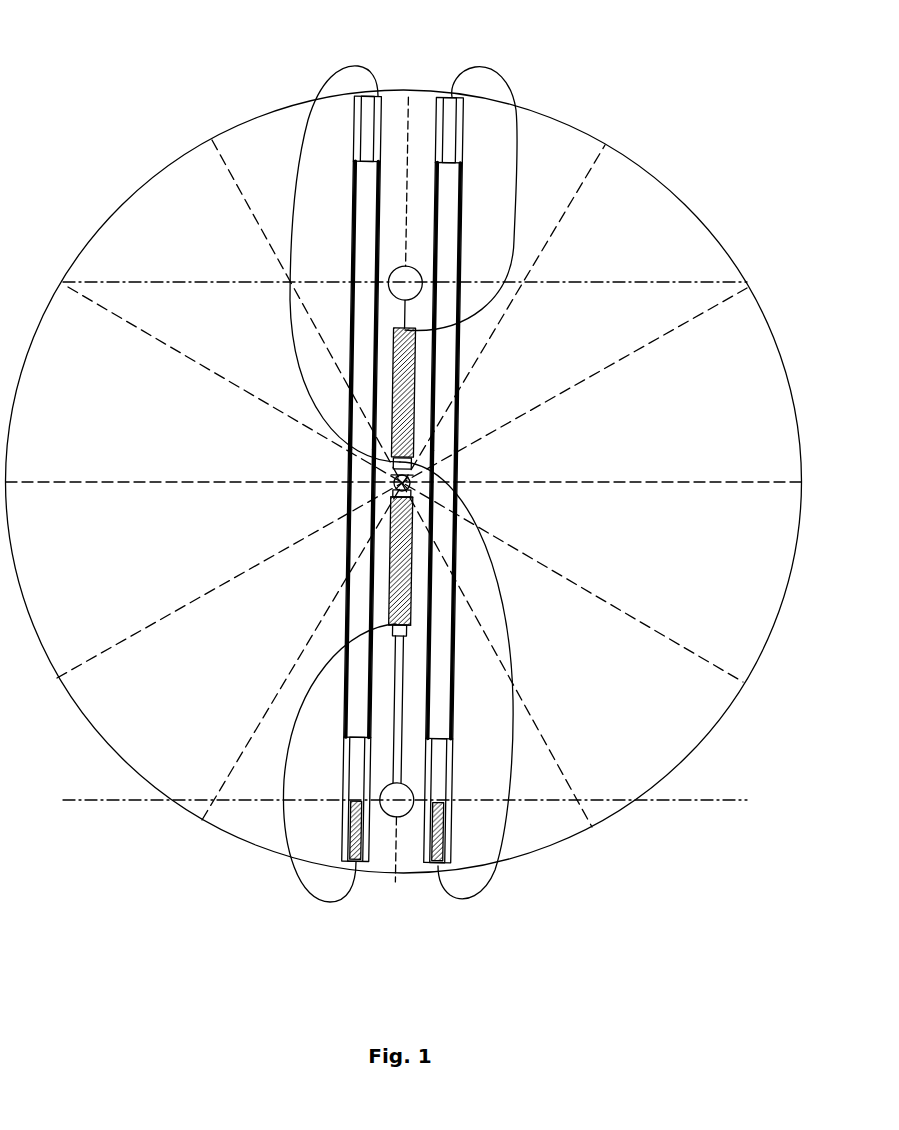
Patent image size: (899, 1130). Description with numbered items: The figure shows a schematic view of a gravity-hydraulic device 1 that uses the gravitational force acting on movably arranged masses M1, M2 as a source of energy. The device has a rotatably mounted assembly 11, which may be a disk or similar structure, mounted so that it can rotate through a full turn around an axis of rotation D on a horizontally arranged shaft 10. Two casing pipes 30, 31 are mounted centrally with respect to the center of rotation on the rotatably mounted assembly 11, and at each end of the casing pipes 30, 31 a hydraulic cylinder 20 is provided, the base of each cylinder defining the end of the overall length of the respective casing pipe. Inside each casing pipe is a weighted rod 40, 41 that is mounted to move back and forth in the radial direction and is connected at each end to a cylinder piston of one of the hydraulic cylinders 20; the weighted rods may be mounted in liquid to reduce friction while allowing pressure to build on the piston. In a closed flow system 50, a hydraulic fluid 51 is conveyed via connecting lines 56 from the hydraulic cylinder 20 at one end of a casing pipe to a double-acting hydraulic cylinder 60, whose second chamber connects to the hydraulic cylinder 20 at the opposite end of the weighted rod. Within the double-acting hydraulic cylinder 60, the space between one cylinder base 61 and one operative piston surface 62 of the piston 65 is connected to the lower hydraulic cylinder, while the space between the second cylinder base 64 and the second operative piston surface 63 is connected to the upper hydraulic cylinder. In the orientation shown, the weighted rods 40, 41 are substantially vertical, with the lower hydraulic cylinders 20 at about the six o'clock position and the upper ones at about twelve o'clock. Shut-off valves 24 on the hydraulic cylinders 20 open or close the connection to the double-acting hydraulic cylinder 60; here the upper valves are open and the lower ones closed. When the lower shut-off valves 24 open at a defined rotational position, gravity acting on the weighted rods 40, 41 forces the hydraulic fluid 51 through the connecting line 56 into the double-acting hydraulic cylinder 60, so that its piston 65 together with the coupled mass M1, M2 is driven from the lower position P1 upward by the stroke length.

The gravity-hydraulic device 1 is at (648, 127).
The horizontally arranged shaft 10 is at (412, 485).
The rotatably mounted assembly 11 is at (133, 240).
The hydraulic cylinder 20 is at (362, 138).
The shut-off valve 24 is at (373, 92).
The casing pipe 30 is at (345, 563).
The casing pipe 31 is at (458, 405).
The weighted rod 40 is at (448, 666).
The weighted rod 41 is at (362, 255).
The flow system 50 is at (518, 705).
The hydraulic fluid 51 is at (442, 827).
The connecting line 56 is at (340, 72).
The double-acting hydraulic cylinder 60 is at (405, 550).
The cylinder base 61 is at (388, 487).
The operative piston surface 62 is at (406, 638).
The second operative piston surface 63 is at (390, 625).
The second cylinder base 64 is at (390, 505).
The piston 65 is at (397, 700).
The axis of rotation D is at (414, 478).
The mass M1 is at (398, 808).
The mass M2 is at (390, 293).
The lower position P1 is at (405, 536).